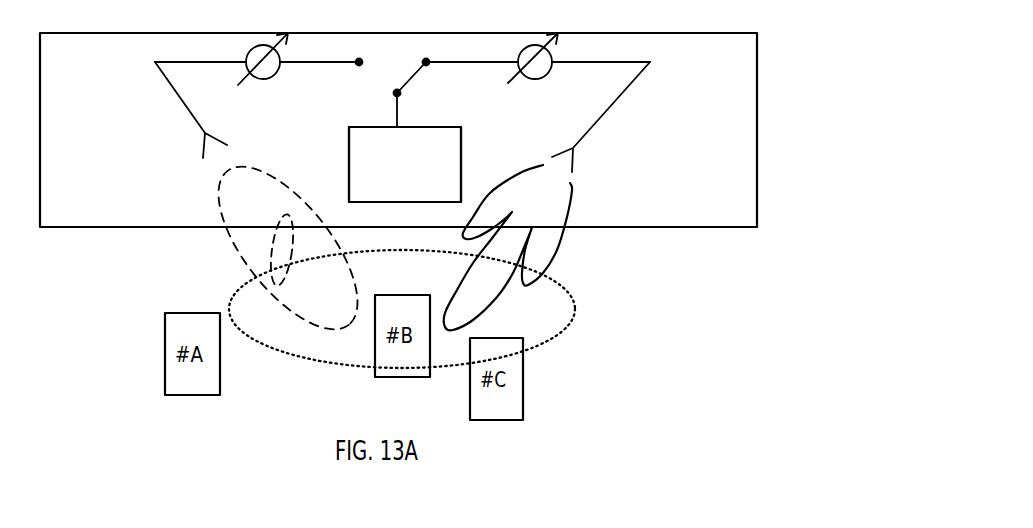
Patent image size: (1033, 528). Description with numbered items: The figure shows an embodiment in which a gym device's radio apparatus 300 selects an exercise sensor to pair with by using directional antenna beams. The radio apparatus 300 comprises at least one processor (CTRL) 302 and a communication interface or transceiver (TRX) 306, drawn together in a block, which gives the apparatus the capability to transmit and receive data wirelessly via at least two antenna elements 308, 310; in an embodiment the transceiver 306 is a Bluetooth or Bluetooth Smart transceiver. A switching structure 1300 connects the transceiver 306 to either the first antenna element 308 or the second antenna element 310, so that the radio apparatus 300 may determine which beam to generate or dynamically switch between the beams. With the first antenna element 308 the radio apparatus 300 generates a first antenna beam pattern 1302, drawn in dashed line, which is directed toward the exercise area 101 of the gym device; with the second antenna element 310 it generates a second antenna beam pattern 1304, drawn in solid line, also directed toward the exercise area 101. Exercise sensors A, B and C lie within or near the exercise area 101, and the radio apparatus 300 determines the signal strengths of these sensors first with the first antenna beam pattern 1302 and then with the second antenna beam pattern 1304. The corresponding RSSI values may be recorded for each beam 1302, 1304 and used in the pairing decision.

The radio apparatus 300 is at (757, 57).
The first antenna element 308 is at (171, 126).
The second antenna element 310 is at (605, 136).
The switching structure 1300 is at (418, 66).
The communication interface (TRX) 306 is at (405, 164).
The processor (CTRL) 302 is at (405, 164).
The first antenna beam pattern 1302 is at (230, 257).
The second antenna beam pattern 1304 is at (562, 258).
The exercise area 101 is at (575, 310).